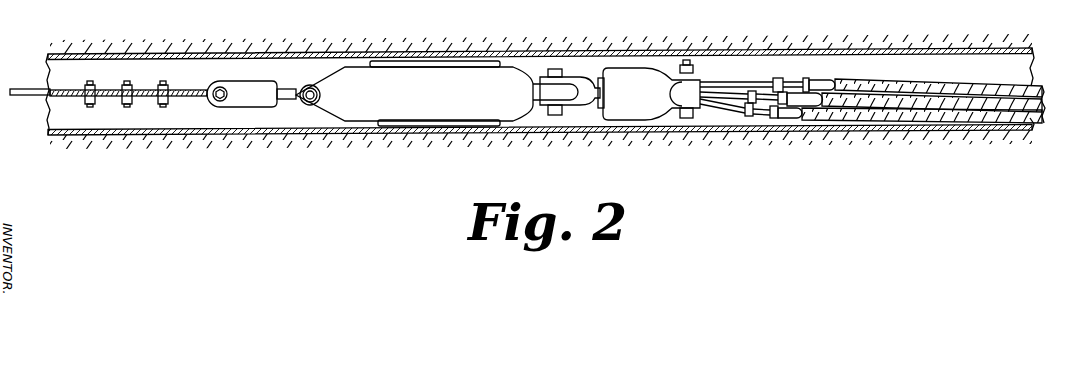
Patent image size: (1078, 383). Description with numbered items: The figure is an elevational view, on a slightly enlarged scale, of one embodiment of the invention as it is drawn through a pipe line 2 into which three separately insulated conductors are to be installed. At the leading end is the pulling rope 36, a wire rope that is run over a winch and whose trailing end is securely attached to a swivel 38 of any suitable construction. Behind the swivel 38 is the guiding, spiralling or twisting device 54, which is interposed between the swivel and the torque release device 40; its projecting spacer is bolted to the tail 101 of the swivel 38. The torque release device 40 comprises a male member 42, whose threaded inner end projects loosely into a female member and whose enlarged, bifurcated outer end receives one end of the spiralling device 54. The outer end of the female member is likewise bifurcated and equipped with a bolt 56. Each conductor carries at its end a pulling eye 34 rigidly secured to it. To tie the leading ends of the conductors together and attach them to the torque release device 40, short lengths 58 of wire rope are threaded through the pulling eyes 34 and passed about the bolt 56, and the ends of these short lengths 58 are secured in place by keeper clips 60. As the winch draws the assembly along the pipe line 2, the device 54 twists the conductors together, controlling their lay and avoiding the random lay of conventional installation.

The pipe line 2 is at (389, 54).
The pulling rope 36 is at (33, 83).
The swivel 38 is at (253, 79).
The tail of the swivel 101 is at (288, 97).
The guiding, spiralling or twisting device 54 is at (422, 77).
The male member 42 is at (592, 83).
The torque release device 40 is at (631, 80).
The bolt 56 is at (702, 58).
The short lengths of wire rope 58 is at (738, 86).
The keeper clips 60 is at (804, 80).
The pulling eye 34 is at (841, 80).